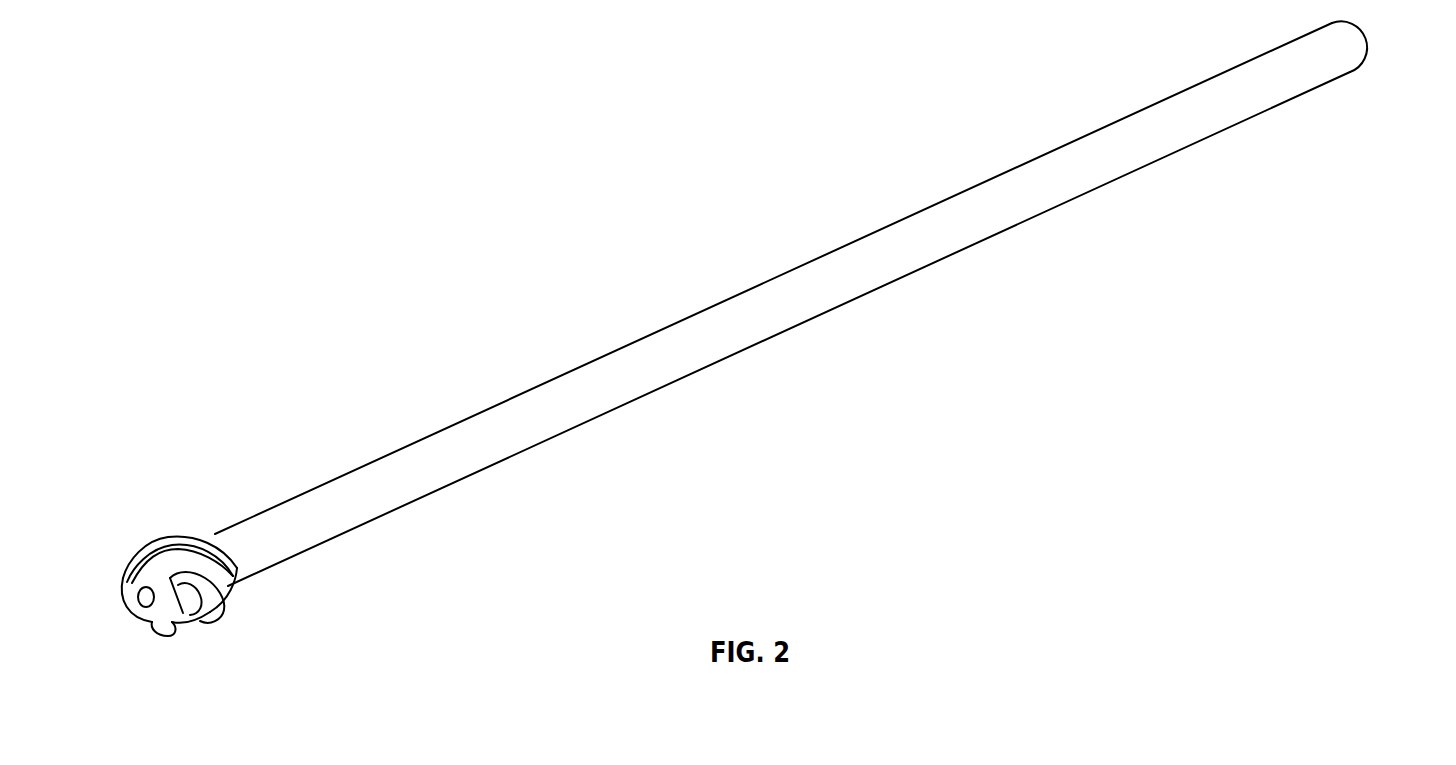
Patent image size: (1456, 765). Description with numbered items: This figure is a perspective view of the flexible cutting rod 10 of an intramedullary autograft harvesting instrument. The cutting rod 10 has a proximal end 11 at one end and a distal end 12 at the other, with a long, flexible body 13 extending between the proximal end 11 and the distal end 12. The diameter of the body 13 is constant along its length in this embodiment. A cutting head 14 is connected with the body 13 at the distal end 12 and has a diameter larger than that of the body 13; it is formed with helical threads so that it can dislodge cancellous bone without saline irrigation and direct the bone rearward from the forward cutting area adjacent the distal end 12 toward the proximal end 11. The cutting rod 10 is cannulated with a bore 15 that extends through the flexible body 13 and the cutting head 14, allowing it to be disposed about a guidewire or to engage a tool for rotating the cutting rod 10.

The cutting rod 10 is at (755, 352).
The proximal end 11 is at (1368, 92).
The distal end 12 is at (179, 584).
The flexible body 13 is at (679, 323).
The cutting head 14 is at (152, 566).
The bore 15 is at (142, 599).